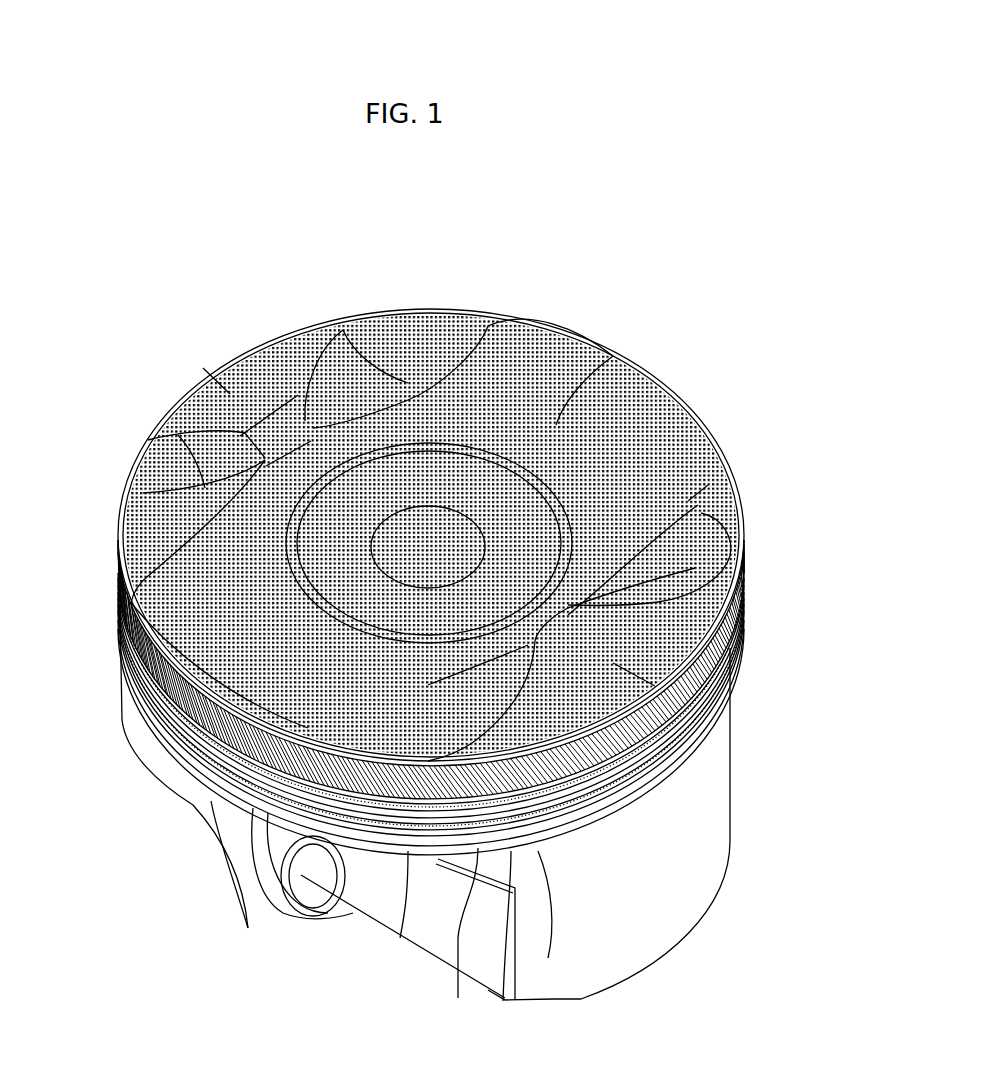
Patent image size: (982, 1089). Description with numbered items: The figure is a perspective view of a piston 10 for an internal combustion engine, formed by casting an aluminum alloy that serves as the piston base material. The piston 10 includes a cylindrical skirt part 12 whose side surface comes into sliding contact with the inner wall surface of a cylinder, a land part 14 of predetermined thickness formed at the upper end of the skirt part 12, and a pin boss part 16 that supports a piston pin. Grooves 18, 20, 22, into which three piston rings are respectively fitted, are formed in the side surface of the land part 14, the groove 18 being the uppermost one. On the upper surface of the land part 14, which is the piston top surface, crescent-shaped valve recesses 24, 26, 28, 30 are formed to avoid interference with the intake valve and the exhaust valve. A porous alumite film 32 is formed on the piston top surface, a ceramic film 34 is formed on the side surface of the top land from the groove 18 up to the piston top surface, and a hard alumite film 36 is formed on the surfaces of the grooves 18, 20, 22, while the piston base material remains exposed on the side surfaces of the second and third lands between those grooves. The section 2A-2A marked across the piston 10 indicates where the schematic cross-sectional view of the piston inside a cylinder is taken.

The piston 10 is at (736, 884).
The skirt part 12 is at (700, 828).
The land part 14 is at (738, 641).
The pin boss part 16 is at (305, 885).
The groove 18 is at (238, 860).
The groove 20 is at (277, 870).
The groove 22 is at (300, 905).
The valve recess 24 is at (144, 422).
The valve recess 26 is at (393, 318).
The valve recess 28 is at (693, 517).
The valve recess 30 is at (402, 908).
The porous alumite film 32 is at (605, 348).
The ceramic film 34 is at (196, 798).
The hard alumite film 36 is at (448, 975).
The section 2A- 2A is at (220, 387).